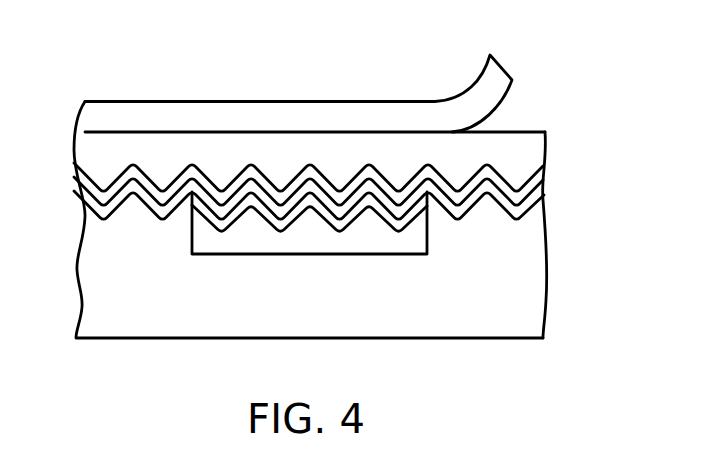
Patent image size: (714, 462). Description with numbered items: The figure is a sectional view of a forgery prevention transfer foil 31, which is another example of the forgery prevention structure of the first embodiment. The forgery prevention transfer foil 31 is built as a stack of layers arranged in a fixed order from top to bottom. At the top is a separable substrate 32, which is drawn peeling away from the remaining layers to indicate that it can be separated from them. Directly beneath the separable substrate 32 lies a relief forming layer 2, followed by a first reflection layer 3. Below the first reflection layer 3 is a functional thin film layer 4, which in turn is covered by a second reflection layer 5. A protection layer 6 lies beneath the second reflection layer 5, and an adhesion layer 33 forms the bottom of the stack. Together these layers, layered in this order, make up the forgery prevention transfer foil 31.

The relief forming layer 2 is at (530, 155).
The first reflection layer 3 is at (537, 181).
The functional thin film layer 4 is at (535, 202).
The second reflection layer 5 is at (398, 229).
The protection layer 6 is at (407, 247).
The forgery prevention transfer foil 31 is at (565, 119).
The separable substrate 32 is at (395, 113).
The adhesion layer 33 is at (503, 325).